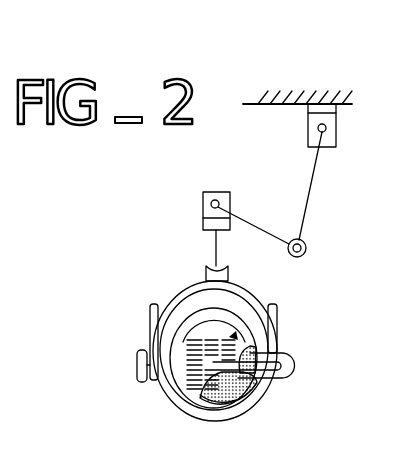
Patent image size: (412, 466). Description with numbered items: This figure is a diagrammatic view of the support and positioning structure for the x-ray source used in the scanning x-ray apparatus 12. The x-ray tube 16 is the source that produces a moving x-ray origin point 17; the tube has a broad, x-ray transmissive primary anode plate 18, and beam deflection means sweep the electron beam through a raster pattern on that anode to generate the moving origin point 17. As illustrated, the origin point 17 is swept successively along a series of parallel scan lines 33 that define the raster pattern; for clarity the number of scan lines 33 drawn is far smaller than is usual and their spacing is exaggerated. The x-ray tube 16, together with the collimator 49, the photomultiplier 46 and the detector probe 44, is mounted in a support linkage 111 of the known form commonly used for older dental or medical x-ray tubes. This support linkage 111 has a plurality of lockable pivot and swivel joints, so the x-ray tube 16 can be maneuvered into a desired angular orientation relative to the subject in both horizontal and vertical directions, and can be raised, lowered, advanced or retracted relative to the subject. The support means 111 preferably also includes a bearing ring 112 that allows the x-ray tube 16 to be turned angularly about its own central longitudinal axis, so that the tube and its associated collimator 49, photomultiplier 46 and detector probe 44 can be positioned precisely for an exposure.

The scanning x-ray apparatus 12 is at (166, 250).
The x-ray tube 16 is at (172, 399).
The x-ray origin point 17 is at (187, 337).
The primary anode plate 18 is at (180, 363).
The scan lines 33 is at (232, 336).
The detector probe 44 is at (248, 337).
The photomultiplier 46 is at (294, 366).
The collimator 49 is at (242, 392).
The support linkage 111 is at (312, 181).
The bearing ring 112 is at (257, 406).